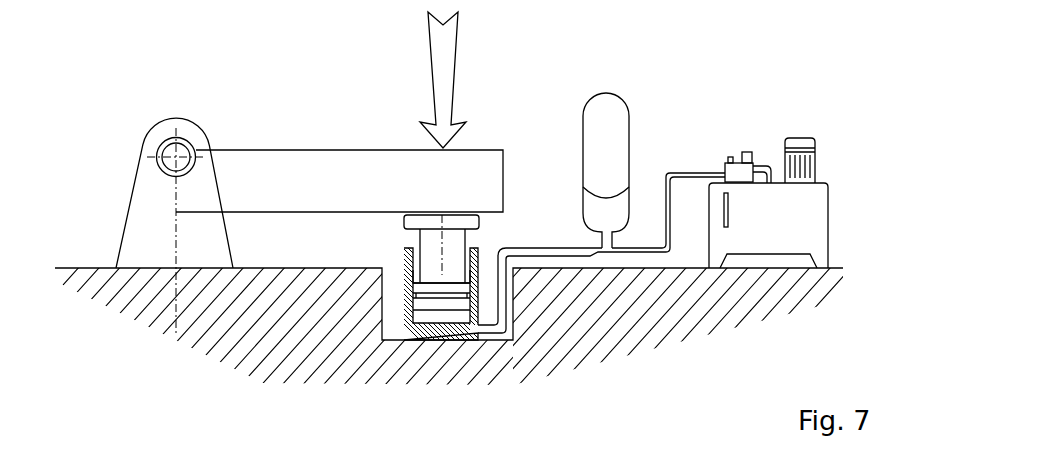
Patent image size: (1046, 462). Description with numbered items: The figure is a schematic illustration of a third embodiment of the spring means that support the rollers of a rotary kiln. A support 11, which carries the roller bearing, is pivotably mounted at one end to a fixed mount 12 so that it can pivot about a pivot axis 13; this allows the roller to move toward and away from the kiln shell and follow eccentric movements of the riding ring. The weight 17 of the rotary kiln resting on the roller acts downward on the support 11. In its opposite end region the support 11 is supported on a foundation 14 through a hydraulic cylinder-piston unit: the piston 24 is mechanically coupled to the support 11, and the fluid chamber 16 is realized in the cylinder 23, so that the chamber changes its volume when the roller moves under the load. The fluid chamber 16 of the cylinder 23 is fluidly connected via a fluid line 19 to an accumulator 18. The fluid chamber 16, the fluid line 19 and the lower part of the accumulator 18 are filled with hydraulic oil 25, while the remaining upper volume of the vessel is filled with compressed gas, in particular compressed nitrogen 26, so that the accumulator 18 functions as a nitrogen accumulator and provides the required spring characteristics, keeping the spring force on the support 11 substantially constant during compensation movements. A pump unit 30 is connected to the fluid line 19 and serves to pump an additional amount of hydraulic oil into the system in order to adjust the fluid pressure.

The support 11 is at (300, 160).
The fixed mount 12 is at (134, 226).
The pivot axis 13 is at (180, 147).
The foundation 14 is at (133, 320).
The fluid chamber 16 is at (442, 318).
The weight 17 is at (437, 67).
The accumulator 18 is at (627, 100).
The fluid line 19 is at (553, 247).
The cylinder 23 is at (407, 313).
The piston 24 is at (425, 234).
The hydraulic oil 25 is at (594, 205).
The compressed nitrogen 26 is at (617, 121).
The pump unit 30 is at (791, 114).